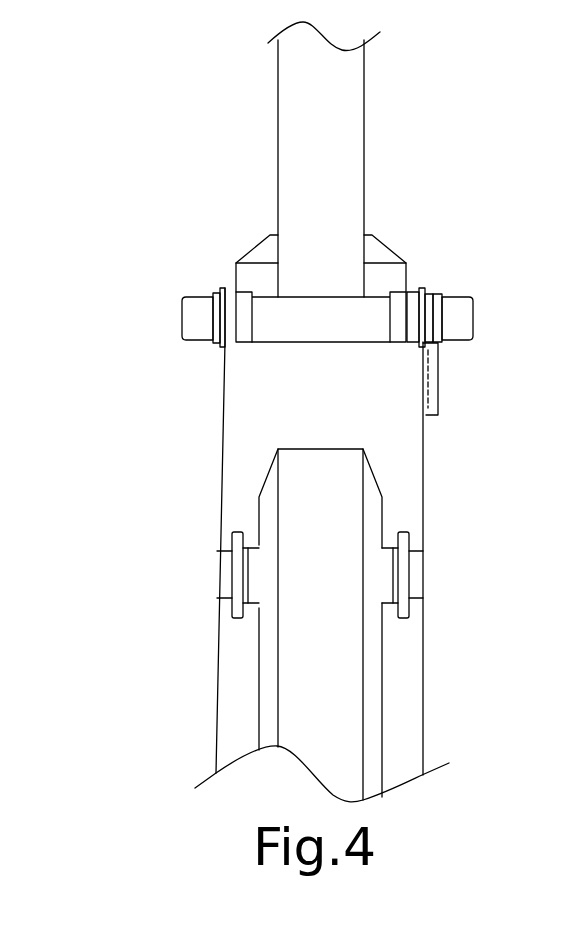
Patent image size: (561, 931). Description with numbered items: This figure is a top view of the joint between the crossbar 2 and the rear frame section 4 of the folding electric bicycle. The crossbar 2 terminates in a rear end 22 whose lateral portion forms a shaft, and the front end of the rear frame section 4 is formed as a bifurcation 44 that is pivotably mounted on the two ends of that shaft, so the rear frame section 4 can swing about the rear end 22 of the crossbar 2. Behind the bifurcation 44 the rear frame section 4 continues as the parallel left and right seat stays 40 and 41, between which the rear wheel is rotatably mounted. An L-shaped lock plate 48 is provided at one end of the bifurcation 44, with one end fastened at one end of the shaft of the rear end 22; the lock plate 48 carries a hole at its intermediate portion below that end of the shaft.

The crossbar 2 is at (322, 112).
The rear frame section 4 is at (181, 466).
The rear end 22 is at (330, 282).
The left seat stay 40 is at (233, 519).
The right seat stay 41 is at (403, 635).
The bifurcation 44 is at (228, 312).
The L-shaped lock plate 48 is at (430, 357).